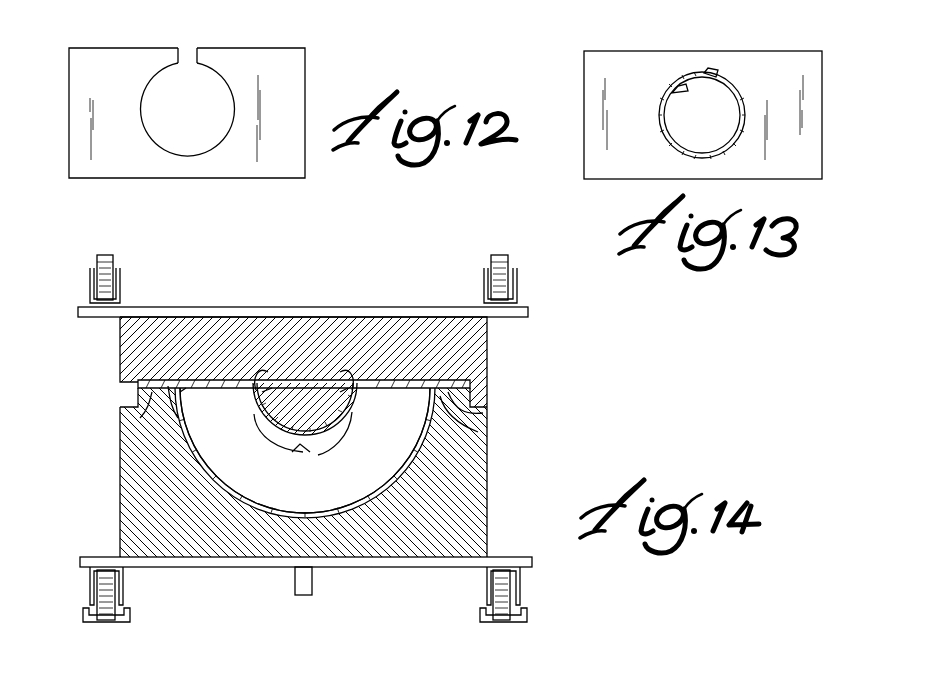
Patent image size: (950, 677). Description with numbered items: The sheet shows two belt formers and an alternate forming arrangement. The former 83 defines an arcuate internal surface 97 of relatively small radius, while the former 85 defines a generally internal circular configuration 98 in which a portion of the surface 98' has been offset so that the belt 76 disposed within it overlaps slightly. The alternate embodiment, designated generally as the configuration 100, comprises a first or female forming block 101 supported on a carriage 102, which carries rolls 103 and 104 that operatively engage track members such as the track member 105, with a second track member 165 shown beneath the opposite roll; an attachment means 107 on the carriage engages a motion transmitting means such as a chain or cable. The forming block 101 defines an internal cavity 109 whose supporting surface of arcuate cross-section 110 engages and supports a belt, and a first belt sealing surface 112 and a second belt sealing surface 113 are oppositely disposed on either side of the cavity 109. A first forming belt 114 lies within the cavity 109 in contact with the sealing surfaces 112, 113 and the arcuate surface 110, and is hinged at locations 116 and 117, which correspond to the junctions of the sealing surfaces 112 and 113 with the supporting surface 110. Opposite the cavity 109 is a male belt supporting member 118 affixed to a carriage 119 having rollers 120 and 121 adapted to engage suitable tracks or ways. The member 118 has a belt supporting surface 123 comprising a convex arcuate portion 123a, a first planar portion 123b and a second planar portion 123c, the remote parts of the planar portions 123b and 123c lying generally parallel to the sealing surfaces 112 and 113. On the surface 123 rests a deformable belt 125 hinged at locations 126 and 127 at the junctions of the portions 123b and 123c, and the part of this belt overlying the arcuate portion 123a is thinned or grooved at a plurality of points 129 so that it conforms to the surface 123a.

In FIG. 12, the former 83 is at (298, 64).
In FIG. 12, the arcuate internal surface 97 is at (228, 85).
In FIG. 13, the former 85 is at (810, 176).
In FIG. 13, the belt 76 is at (738, 108).
In FIG. 13, the internal circular configuration 98 is at (644, 56).
In FIG. 13, the offset surface portion 98' is at (743, 48).
In FIG. 14, the configuration 100 is at (96, 390).
In FIG. 14, the female forming block 101 is at (126, 490).
In FIG. 14, the carriage 102 is at (116, 556).
In FIG. 14, the roll 103 is at (128, 605).
In FIG. 14, the roll 104 is at (503, 610).
In FIG. 14, the track member 105 is at (108, 624).
In FIG. 14, the bracket 165 is at (516, 624).
In FIG. 14, the attachment means 107 is at (313, 576).
In FIG. 14, the internal cavity 109 is at (372, 480).
In FIG. 14, the supporting surface of arcuate cross-section 110 is at (212, 462).
In FIG. 14, the first belt sealing surface 112 is at (153, 392).
In FIG. 14, the second belt sealing surface 113 is at (483, 413).
In FIG. 14, the first forming belt 114 is at (254, 506).
In FIG. 14, the hinge location 116 is at (168, 386).
In FIG. 14, the hinge location 117 is at (478, 432).
In FIG. 14, the male belt supporting member 118 is at (130, 352).
In FIG. 14, the carriage 119 is at (340, 311).
In FIG. 14, the roller 120 is at (103, 257).
In FIG. 14, the roller 121 is at (492, 258).
In FIG. 14, the belt supporting surface 123 is at (262, 394).
In FIG. 14, the convex arcuate portion 123a is at (363, 437).
In FIG. 14, the first planar portion 123b is at (258, 378).
In FIG. 14, the second planar portion 123c is at (379, 387).
In FIG. 14, the deformable belt 125 is at (210, 420).
In FIG. 14, the hinge location 126 is at (258, 390).
In FIG. 14, the hinge location 127 is at (356, 402).
In FIG. 14, the thinned or grooved points 129 is at (303, 446).